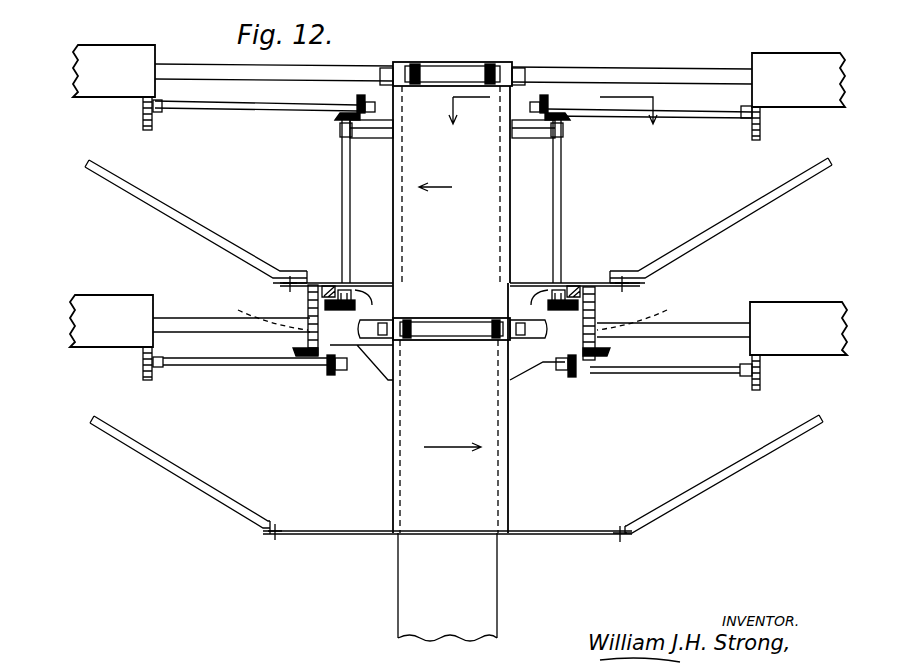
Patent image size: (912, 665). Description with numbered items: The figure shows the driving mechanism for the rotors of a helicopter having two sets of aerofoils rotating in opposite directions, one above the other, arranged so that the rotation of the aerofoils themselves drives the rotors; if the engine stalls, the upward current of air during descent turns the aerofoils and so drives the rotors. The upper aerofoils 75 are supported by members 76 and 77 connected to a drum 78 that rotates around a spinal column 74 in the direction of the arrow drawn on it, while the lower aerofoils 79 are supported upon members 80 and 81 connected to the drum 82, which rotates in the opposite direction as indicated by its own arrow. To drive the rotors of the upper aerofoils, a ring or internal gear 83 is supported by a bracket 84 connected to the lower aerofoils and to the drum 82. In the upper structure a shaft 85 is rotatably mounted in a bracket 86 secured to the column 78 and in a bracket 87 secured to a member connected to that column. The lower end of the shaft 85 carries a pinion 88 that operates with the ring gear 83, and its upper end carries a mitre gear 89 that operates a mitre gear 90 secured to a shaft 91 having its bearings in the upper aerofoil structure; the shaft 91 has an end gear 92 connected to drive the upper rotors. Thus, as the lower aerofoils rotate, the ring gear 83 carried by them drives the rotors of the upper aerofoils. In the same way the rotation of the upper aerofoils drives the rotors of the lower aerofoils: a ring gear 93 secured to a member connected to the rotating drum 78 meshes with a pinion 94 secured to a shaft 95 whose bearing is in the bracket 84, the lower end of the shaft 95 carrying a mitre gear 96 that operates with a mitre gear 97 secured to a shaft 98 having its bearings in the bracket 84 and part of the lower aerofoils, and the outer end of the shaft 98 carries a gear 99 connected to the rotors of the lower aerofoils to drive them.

The spinal column 74 is at (497, 580).
The upper aerofoils 75 is at (117, 45).
The supporting member 76 is at (210, 70).
The supporting member 77 is at (178, 220).
The drum 78 is at (452, 172).
The lower aerofoils 79 is at (108, 300).
The supporting member 80 is at (180, 318).
The supporting member 81 is at (192, 482).
The drum 82 is at (452, 408).
The ring gear 83 is at (308, 308).
The bracket 84 is at (368, 370).
The shaft 85 is at (342, 207).
The bracket 86 is at (378, 138).
The bracket 87 is at (368, 286).
The pinion 88 is at (356, 306).
The mitre gear 89 is at (336, 118).
The mitre gear 90 is at (357, 98).
The shaft 91 is at (260, 108).
The end gear 92 is at (143, 122).
The ring gear 93 is at (328, 285).
The pinion 94 is at (300, 279).
The shaft 95 is at (447, 313).
The mitre gear 96 is at (294, 351).
The mitre gear 97 is at (330, 374).
The shaft 98 is at (237, 365).
The gear 99 is at (143, 374).